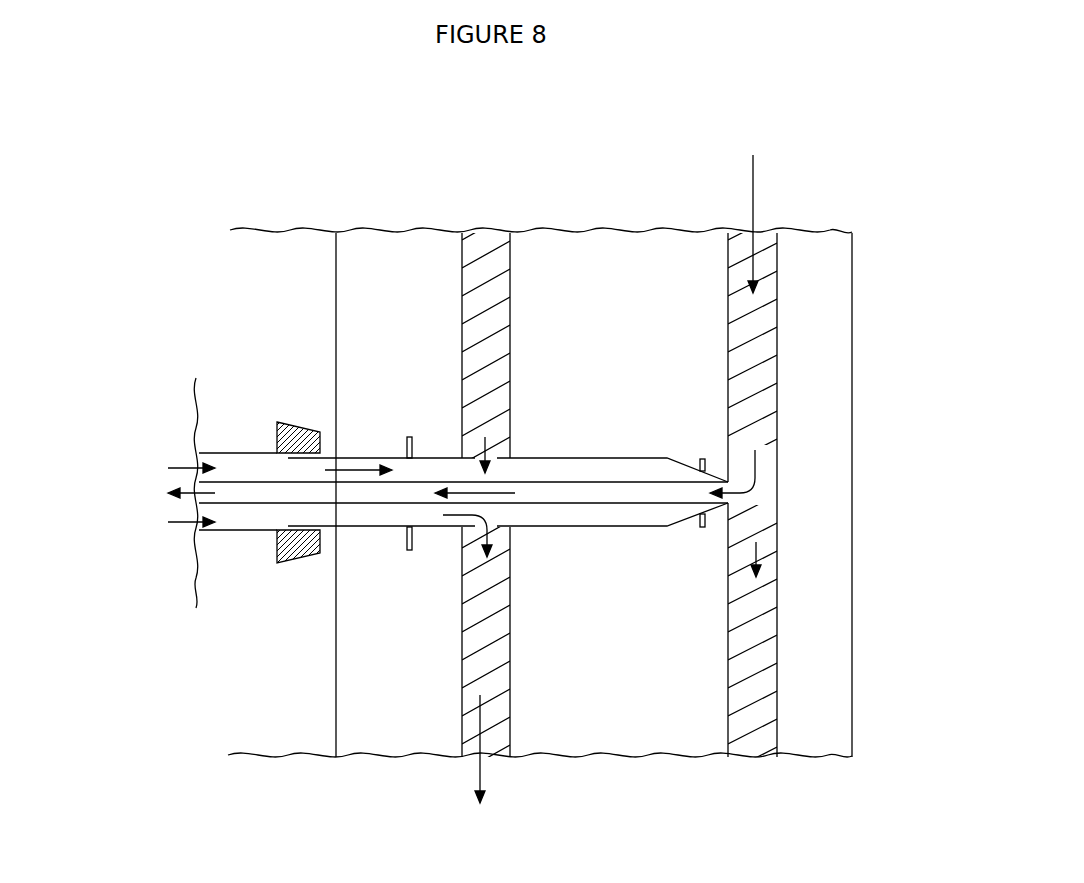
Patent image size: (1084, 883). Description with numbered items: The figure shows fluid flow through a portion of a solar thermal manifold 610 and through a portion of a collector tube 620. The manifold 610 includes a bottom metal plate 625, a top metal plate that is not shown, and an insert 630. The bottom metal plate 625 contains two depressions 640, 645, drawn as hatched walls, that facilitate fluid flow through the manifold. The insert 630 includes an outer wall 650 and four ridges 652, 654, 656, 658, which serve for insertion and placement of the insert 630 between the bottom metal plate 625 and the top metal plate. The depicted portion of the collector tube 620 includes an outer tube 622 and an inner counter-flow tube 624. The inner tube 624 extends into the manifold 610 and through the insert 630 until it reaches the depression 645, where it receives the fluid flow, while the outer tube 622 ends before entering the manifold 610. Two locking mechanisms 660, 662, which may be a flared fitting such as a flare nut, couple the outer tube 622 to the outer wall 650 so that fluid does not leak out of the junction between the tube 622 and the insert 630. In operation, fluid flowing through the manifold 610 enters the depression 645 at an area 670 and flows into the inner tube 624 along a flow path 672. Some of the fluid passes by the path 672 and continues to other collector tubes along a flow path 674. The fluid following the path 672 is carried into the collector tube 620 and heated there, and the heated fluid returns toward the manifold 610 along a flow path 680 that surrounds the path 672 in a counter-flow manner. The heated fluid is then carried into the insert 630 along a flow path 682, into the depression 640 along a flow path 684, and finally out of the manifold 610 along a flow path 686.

The solar thermal manifold 610 is at (864, 383).
The collector tube 620 is at (224, 445).
The outer tube 622 is at (258, 467).
The inner counter-flow tube 624 is at (228, 488).
The bottom metal plate 625 is at (403, 260).
The insert 630 is at (600, 452).
The depression 640 is at (490, 262).
The depression 645 is at (765, 252).
The outer wall 650 is at (610, 525).
The ridge 652 is at (415, 450).
The ridge 654 is at (407, 550).
The ridge 656 is at (703, 459).
The ridge 658 is at (705, 528).
The locking mechanism 660 is at (293, 427).
The locking mechanism 662 is at (287, 563).
The area 670 is at (753, 213).
The flow path 672 is at (753, 468).
The flow path 674 is at (758, 570).
The flow path 680 is at (187, 520).
The flow path 682 is at (360, 466).
The flow path 684 is at (492, 533).
The flow path 686 is at (490, 762).